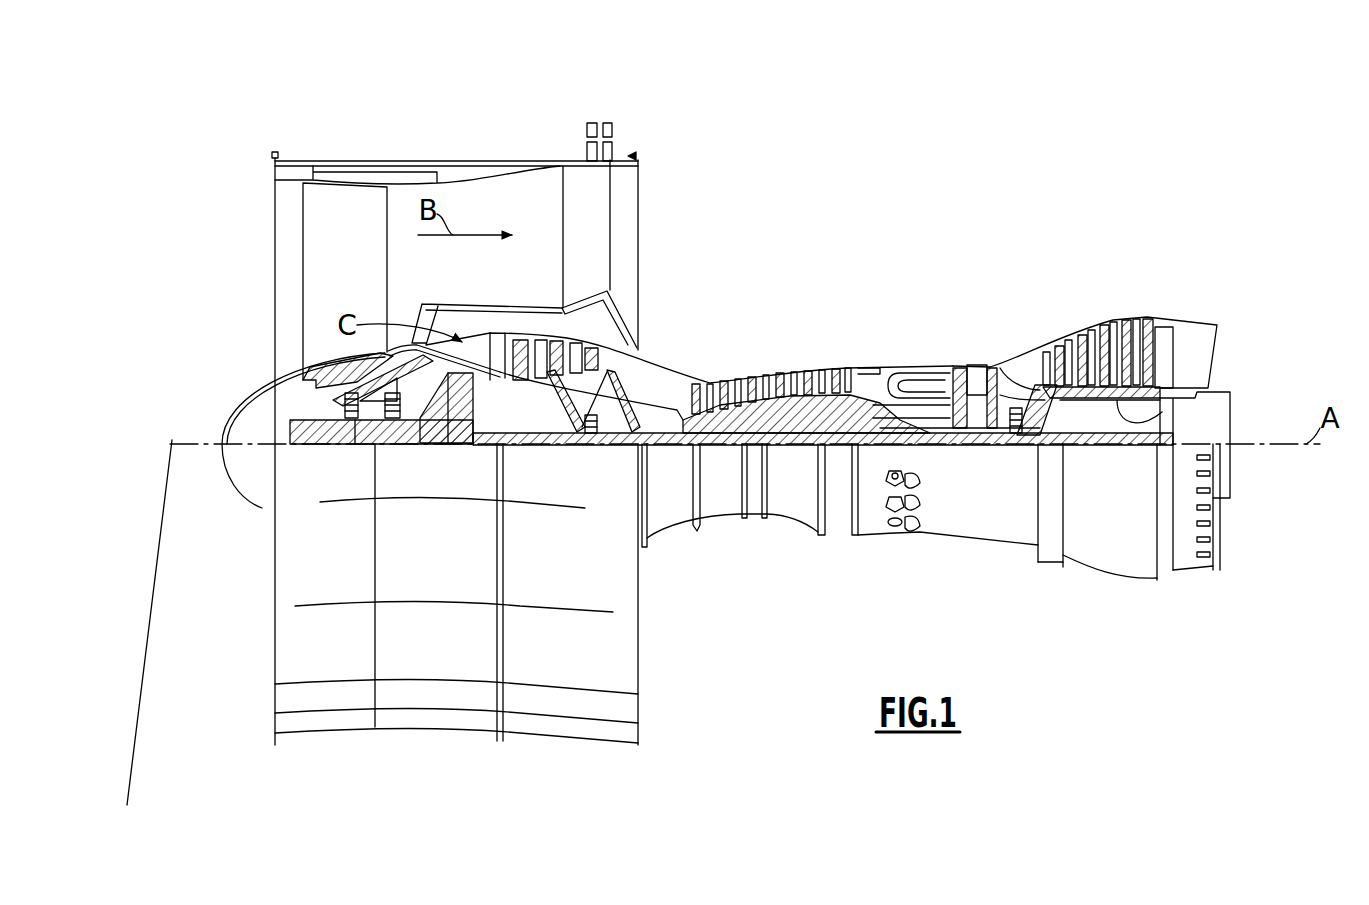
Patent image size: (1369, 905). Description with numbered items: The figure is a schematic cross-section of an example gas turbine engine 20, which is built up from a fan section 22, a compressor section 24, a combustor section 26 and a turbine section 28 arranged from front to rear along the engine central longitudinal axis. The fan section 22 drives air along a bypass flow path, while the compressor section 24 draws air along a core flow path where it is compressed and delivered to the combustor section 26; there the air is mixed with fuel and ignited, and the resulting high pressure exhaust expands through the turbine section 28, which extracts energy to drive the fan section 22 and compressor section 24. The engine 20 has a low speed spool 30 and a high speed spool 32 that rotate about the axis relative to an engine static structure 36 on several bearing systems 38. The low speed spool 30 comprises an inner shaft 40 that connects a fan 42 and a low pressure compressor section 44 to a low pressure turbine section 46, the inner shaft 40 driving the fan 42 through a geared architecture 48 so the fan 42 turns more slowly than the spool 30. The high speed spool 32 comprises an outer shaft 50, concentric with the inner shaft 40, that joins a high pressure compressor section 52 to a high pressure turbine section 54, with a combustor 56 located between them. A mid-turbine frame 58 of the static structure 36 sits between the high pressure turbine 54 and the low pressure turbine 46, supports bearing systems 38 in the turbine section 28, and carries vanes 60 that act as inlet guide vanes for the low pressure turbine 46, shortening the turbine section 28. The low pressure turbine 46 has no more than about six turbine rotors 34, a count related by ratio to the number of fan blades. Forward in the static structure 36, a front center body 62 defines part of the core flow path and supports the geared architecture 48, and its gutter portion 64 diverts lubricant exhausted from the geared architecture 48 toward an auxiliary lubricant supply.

The gas turbine engine 20 is at (918, 210).
The fan section 22 is at (483, 137).
The compressor section 24 is at (497, 280).
The combustor section 26 is at (998, 280).
The turbine section 28 is at (1008, 280).
The low speed spool 30 is at (795, 452).
The high speed spool 32 is at (840, 387).
The turbine rotors 34 is at (1118, 405).
The engine static structure 36 is at (835, 542).
The bearing systems 38 is at (337, 444).
The inner shaft 40 is at (655, 447).
The fan 42 is at (330, 289).
The low pressure compressor section 44 is at (572, 347).
The low pressure turbine section 46 is at (1102, 340).
The geared architecture 48 is at (438, 422).
The outer shaft 50 is at (922, 448).
The high pressure compressor section 52 is at (762, 383).
The high pressure turbine section 54 is at (978, 367).
The combustor 56 is at (912, 387).
The mid-turbine frame 58 is at (1024, 348).
The vanes 60 is at (1055, 417).
The front center body 62 is at (585, 285).
The gutter portion 64 is at (400, 443).